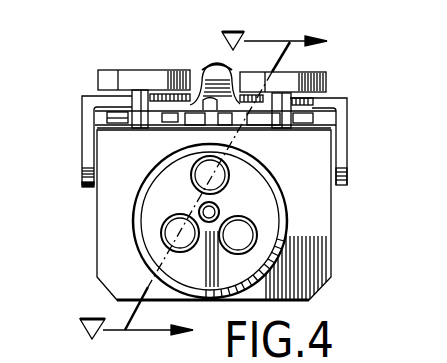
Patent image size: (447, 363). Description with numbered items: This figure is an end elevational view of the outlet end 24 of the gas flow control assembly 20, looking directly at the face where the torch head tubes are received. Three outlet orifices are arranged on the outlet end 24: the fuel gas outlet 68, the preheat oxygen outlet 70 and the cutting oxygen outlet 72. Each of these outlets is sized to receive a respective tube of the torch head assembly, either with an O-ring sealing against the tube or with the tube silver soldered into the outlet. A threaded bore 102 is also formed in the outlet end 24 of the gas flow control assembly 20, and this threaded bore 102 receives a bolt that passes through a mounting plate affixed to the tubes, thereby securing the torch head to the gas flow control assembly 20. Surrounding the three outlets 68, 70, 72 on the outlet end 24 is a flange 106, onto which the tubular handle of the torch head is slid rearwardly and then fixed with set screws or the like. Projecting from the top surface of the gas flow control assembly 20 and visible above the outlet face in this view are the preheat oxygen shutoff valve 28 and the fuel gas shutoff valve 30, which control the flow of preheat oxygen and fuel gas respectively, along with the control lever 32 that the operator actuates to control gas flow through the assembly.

The gas flow control assembly 20 is at (359, 172).
The outlet end 24 is at (141, 162).
The preheat oxygen shutoff valve 28 is at (110, 78).
The fuel gas shutoff valve 30 is at (327, 73).
The control lever 32 is at (348, 117).
The fuel gas outlet 68 is at (246, 237).
The preheat oxygen outlet 70 is at (166, 228).
The cutting oxygen outlet 72 is at (197, 178).
The threaded bore 102 is at (217, 210).
The flange 106 is at (281, 277).